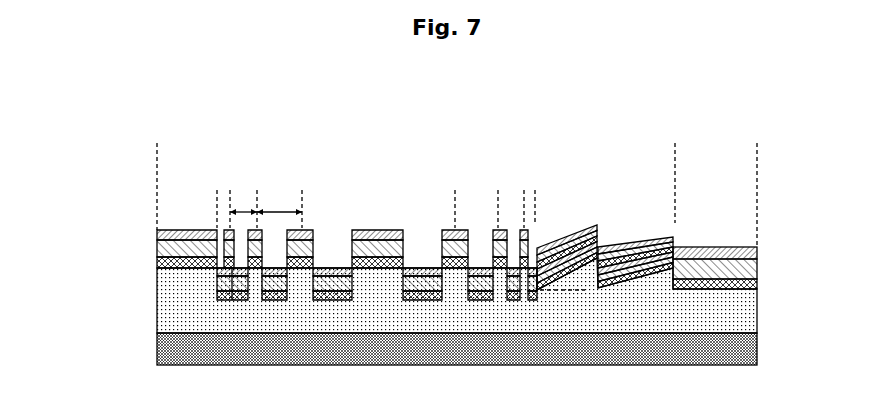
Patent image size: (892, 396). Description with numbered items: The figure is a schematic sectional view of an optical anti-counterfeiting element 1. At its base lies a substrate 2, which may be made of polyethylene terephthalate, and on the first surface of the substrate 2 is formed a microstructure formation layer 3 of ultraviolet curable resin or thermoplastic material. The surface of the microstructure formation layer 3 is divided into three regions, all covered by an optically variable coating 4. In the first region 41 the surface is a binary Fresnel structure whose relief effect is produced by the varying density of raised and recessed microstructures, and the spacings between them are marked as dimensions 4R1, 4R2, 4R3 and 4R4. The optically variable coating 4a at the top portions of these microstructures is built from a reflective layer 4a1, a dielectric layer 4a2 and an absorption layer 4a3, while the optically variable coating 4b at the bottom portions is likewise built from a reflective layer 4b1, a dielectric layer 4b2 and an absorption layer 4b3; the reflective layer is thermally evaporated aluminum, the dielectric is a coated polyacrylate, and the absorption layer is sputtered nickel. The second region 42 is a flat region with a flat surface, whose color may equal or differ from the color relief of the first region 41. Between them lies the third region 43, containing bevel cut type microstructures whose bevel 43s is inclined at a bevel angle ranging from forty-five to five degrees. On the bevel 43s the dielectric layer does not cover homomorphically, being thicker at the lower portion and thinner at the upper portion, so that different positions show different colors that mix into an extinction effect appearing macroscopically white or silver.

The optical anti-counterfeiting element 1 is at (772, 237).
The substrate 2 is at (738, 352).
The microstructure formation layer 3 is at (738, 320).
The optically variable coating 4 is at (758, 268).
The optically variable coating at the top portion 4a is at (70, 220).
The reflective layer 4a1 is at (157, 263).
The dielectric layer 4a2 is at (157, 248).
The absorption layer 4a3 is at (157, 235).
The optically variable coating at the bottom portion 4b is at (97, 282).
The reflective layer 4b1 is at (233, 300).
The dielectric layer 4b2 is at (233, 284).
The absorption layer 4b3 is at (233, 269).
The first region 41 is at (532, 143).
The second region 42 is at (757, 143).
The third region 43 is at (672, 143).
The bevel of the microstructure 43s is at (567, 286).
The first period 4R1 is at (455, 212).
The second period 4R2 is at (498, 212).
The third period 4R3 is at (524, 212).
The fourth period 4R4 is at (533, 208).